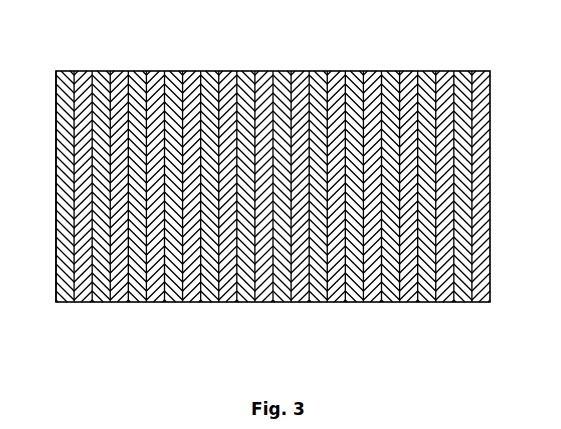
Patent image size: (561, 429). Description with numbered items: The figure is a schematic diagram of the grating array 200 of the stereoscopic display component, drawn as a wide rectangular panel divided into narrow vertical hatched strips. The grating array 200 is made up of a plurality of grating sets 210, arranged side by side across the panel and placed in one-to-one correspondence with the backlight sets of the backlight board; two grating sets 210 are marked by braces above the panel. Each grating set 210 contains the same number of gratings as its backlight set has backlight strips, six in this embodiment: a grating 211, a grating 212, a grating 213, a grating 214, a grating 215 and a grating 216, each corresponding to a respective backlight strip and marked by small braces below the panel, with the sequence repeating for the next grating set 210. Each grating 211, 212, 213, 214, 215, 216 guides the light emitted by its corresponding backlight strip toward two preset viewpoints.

The grating array 200 is at (262, 367).
The grating set 210 is at (490, 71).
The grating 211 is at (57, 304).
The grating 212 is at (93, 304).
The grating 213 is at (129, 304).
The grating 214 is at (166, 304).
The grating 215 is at (202, 304).
The grating 216 is at (238, 304).